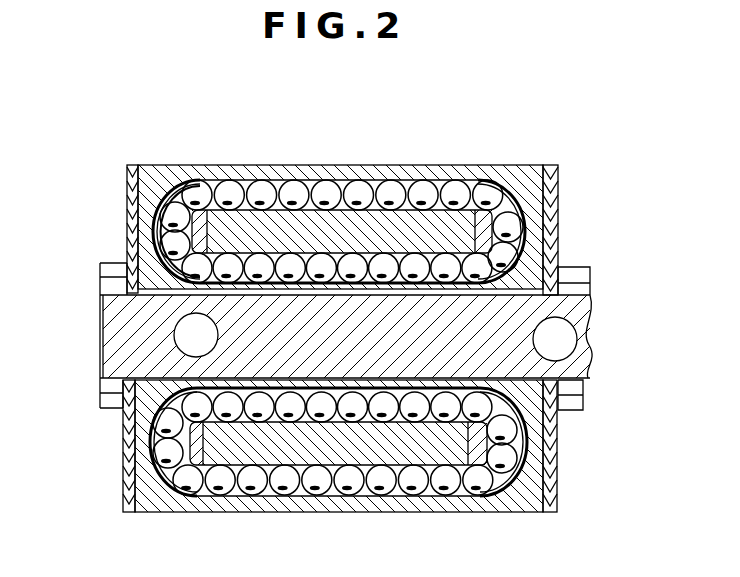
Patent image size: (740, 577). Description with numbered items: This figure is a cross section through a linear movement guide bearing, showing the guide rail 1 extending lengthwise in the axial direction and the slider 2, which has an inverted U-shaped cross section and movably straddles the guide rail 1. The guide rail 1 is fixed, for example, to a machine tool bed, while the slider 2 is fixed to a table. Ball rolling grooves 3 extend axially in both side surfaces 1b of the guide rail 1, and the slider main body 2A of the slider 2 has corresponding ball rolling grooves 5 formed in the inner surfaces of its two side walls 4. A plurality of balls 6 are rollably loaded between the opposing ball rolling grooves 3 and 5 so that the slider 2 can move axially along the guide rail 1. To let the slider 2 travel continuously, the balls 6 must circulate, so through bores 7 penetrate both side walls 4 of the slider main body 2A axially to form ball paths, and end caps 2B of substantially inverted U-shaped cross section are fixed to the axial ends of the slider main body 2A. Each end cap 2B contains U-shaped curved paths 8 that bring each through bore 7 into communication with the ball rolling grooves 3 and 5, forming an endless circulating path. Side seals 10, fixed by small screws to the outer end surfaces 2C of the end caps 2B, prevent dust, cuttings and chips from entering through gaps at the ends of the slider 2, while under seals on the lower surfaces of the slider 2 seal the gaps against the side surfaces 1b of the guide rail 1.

The guide rail 1 is at (105, 366).
The side surfaces of the guide rail 1b is at (583, 412).
The slider 2 is at (325, 195).
The slider main body 2A is at (411, 170).
The end caps 2B is at (157, 172).
The outer end surfaces of the end caps 2C is at (125, 493).
The ball rolling grooves of the guide rail 3 is at (582, 265).
The side walls 4 is at (291, 512).
The ball rolling grooves of the slider 5 is at (352, 170).
The balls 6 is at (297, 187).
The through bores 7 is at (360, 496).
The curved paths 8 is at (172, 198).
The side seals 10 is at (308, 467).